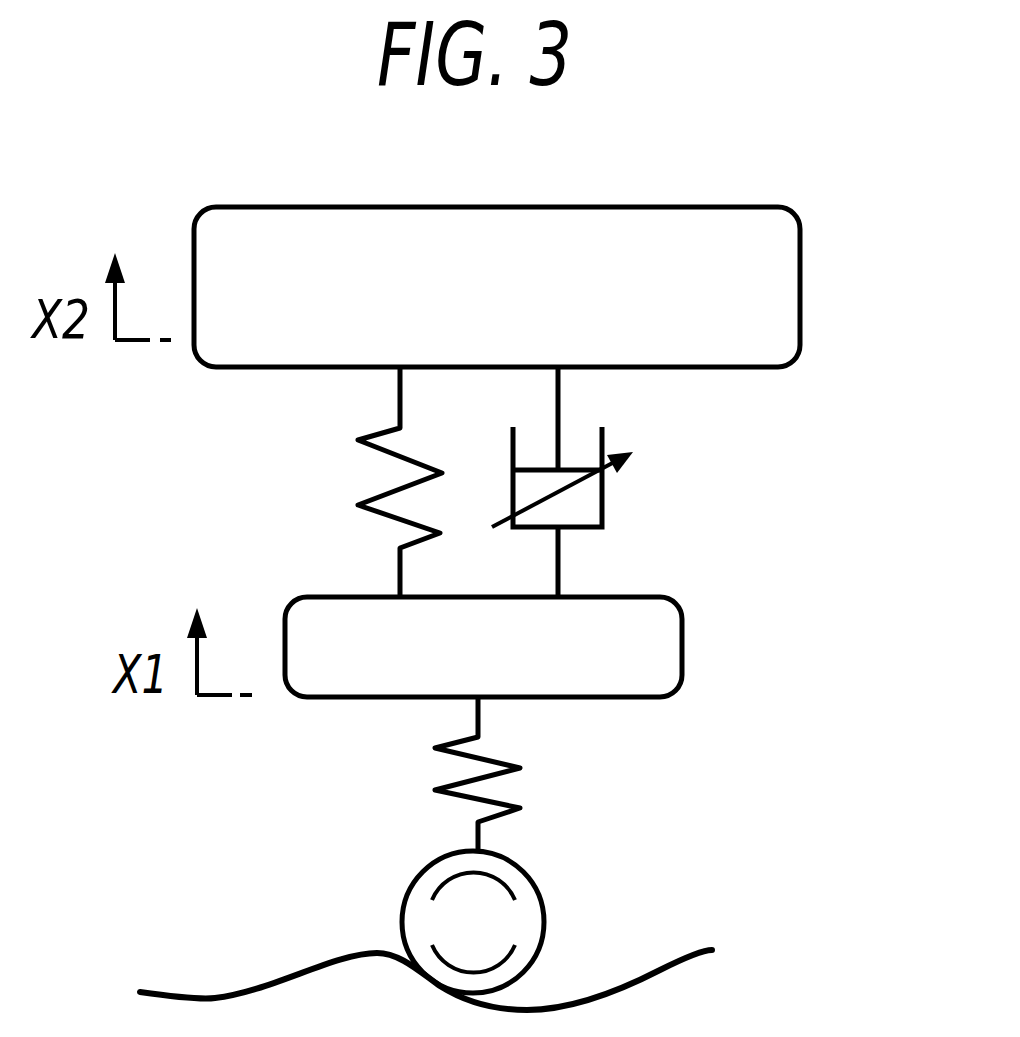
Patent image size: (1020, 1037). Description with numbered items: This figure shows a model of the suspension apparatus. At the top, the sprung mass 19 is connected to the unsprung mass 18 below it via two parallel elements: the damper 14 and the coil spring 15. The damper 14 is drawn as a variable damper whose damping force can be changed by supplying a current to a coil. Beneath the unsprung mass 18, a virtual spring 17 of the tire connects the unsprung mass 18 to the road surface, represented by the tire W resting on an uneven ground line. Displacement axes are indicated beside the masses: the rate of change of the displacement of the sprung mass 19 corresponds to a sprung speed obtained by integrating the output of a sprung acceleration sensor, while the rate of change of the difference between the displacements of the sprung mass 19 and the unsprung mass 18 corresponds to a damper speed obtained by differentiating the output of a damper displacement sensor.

The sprung mass 19 is at (802, 293).
The unsprung mass 18 is at (684, 645).
The coil spring 15 is at (383, 512).
The damper 14 is at (603, 508).
The virtual spring of a tire 17 is at (460, 757).
The tire (wheel) W is at (527, 898).